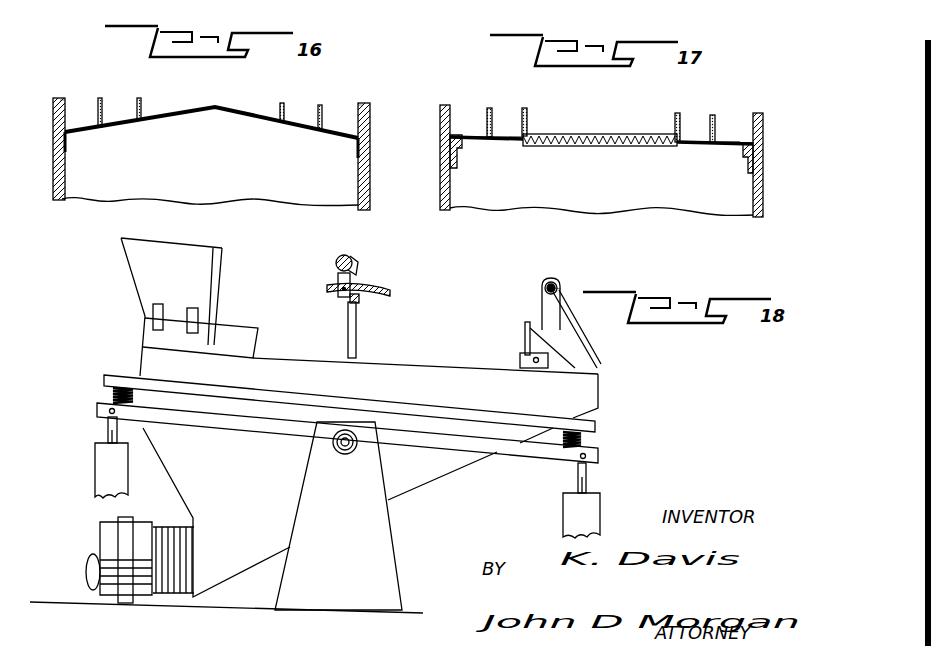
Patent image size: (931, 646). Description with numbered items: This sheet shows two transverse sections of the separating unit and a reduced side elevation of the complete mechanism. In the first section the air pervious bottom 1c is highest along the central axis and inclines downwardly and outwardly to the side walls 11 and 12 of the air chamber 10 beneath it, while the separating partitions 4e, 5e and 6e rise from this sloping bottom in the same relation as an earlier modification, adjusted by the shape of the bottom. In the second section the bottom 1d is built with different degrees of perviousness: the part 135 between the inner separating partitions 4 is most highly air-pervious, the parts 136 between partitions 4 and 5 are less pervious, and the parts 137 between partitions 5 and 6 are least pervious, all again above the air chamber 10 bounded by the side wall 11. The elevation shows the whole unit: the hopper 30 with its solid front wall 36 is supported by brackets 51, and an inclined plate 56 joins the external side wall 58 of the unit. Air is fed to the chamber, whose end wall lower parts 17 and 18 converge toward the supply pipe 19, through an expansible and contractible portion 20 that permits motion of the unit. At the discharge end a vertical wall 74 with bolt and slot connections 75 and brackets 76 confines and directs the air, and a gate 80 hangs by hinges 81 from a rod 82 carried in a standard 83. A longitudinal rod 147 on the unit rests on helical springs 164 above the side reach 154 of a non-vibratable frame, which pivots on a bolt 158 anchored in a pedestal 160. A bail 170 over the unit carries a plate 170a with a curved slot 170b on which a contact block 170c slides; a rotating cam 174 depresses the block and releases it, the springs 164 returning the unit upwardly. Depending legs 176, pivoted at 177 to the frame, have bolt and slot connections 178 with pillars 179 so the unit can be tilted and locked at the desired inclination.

In FIG. 16, the air pervious bottom 1c is at (170, 120).
In FIG. 17, the bottom 1d is at (572, 135).
In FIG. 17, the separating partition 4 is at (528, 120).
In FIG. 16, the separating partition 4e is at (141, 100).
In FIG. 17, the separating partition 5 is at (497, 115).
In FIG. 16, the separating partition 5e is at (101, 100).
In FIG. 17, the separating partition 6 is at (457, 113).
In FIG. 16, the separating partition 6e is at (65, 107).
In FIG. 16, the air chamber 10 is at (221, 137).
In FIG. 17, the air chamber 10 is at (570, 190).
In FIG. 16, the side wall 11 is at (56, 170).
In FIG. 17, the side wall 11 is at (440, 188).
In FIG. 16, the side wall 12 is at (368, 177).
In FIG. 17, the part 135 is at (597, 146).
In FIG. 17, the part 136 is at (503, 140).
In FIG. 17, the part 137 is at (450, 160).
In FIG. 18, the lower part of end wall 17 is at (186, 473).
In FIG. 18, the lower part of end wall 18 is at (440, 477).
In FIG. 18, the supply pipe 19 is at (101, 547).
In FIG. 18, the expansible and contractible portion 20 is at (165, 595).
In FIG. 18, the hopper 30 is at (180, 227).
In FIG. 18, the front wall 36 is at (220, 262).
In FIG. 18, the brackets 51 is at (163, 312).
In FIG. 18, the inclined plate 56 is at (240, 330).
In FIG. 18, the external side wall 58 is at (322, 343).
In FIG. 18, the vertical wall 74 is at (525, 338).
In FIG. 18, the bolt and slot connection 75 is at (520, 362).
In FIG. 18, the bracket 76 is at (567, 332).
In FIG. 18, the gate 80 is at (590, 342).
In FIG. 18, the hinge 81 is at (563, 293).
In FIG. 18, the rod 82 is at (542, 295).
In FIG. 18, the standard 83 is at (552, 281).
In FIG. 18, the rod 147 is at (443, 387).
In FIG. 18, the side reach 154 is at (258, 431).
In FIG. 18, the bolt 158 is at (345, 455).
In FIG. 18, the pedestal 160 is at (370, 518).
In FIG. 18, the helical spring 164 is at (113, 393).
In FIG. 18, the bail 170 is at (358, 328).
In FIG. 18, the plate 170a is at (380, 296).
In FIG. 18, the curved slot 170b is at (348, 299).
In FIG. 18, the contact block 170c is at (351, 279).
In FIG. 18, the cam 174 is at (356, 259).
In FIG. 18, the leg 176 is at (108, 426).
In FIG. 18, the pivotal connection 177 is at (108, 411).
In FIG. 18, the bolt and slot connection 178 is at (108, 444).
In FIG. 18, the pillar 179 is at (103, 462).